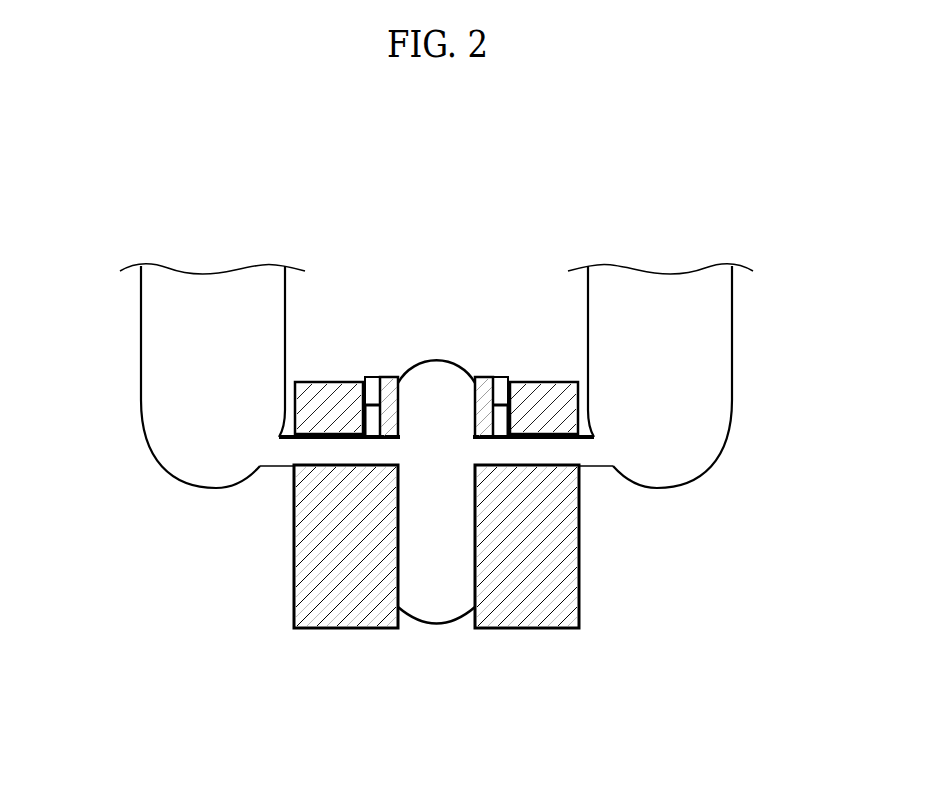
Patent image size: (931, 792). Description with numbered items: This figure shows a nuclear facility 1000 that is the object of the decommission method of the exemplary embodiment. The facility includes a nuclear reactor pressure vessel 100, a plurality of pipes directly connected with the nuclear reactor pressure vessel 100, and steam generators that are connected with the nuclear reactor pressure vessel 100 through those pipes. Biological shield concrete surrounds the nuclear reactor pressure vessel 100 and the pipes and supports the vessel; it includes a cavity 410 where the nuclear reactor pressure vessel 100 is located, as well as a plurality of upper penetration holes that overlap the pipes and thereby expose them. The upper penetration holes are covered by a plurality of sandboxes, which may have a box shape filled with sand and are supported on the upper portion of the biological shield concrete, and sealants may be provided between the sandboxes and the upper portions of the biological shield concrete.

The nuclear facility 1000 is at (460, 163).
The nuclear reactor pressure vessel 100 is at (437, 609).
The cavity 410 is at (434, 392).